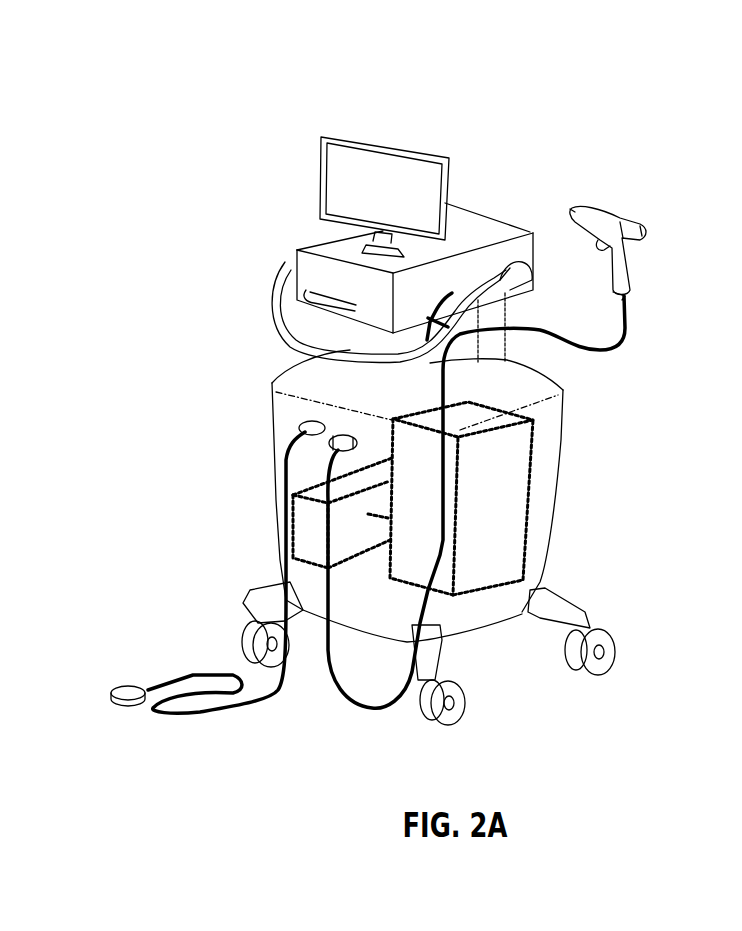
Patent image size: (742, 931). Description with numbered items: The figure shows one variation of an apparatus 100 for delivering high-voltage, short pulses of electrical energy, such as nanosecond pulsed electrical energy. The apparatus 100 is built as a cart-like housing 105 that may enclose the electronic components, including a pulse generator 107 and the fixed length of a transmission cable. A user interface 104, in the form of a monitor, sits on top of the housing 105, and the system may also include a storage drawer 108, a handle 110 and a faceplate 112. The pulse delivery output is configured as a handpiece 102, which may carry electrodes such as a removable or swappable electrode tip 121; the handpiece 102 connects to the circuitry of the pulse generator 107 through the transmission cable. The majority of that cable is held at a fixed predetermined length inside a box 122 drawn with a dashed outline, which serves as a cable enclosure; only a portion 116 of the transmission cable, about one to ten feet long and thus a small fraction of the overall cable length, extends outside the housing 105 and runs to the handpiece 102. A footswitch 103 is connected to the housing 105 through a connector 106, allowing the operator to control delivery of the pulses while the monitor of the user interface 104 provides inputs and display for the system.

The apparatus 100 is at (522, 152).
The handpiece 102 is at (607, 207).
The footswitch 103 is at (128, 686).
The user interface 104 is at (382, 142).
The housing 105 is at (542, 443).
The connector 106 is at (270, 422).
The pulse generator 107 is at (302, 536).
The storage drawer 108 is at (288, 275).
The handle 110 is at (283, 328).
The faceplate 112 is at (330, 445).
The portion of the transmission cable 116 is at (600, 350).
The electrode tip 121 is at (573, 207).
The box 122 is at (490, 513).